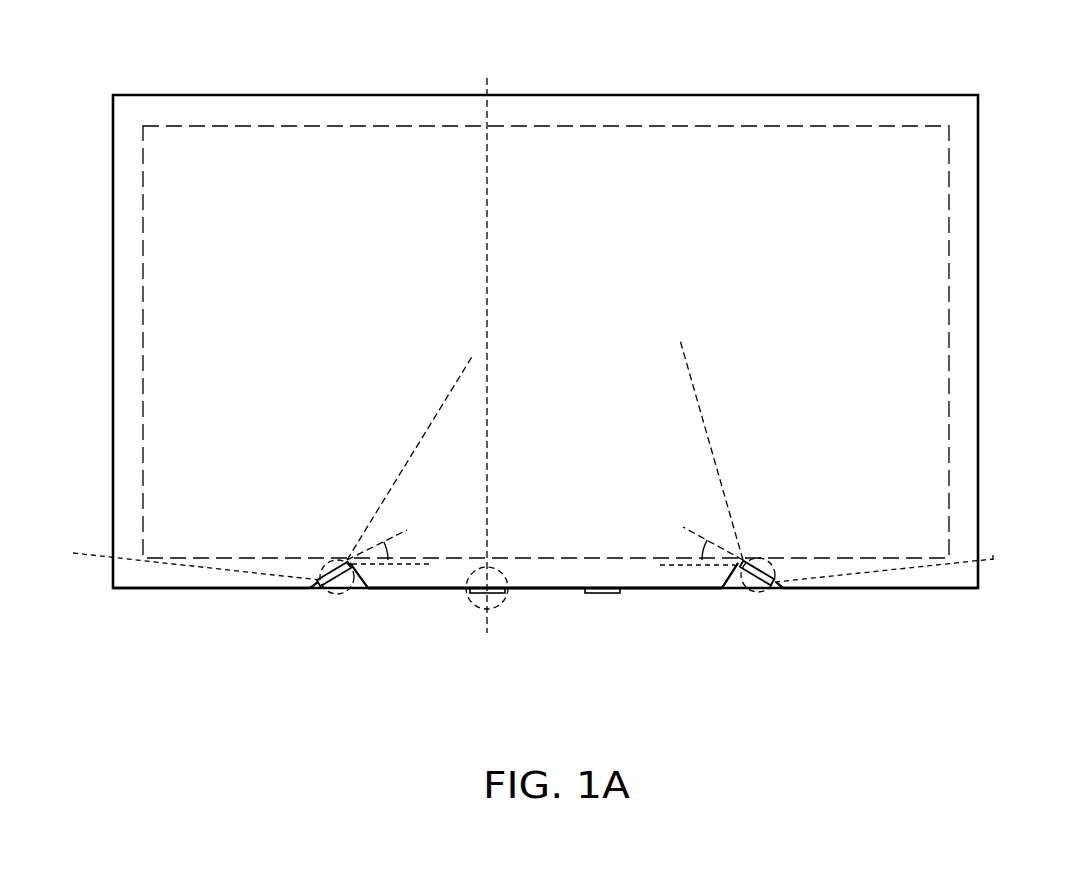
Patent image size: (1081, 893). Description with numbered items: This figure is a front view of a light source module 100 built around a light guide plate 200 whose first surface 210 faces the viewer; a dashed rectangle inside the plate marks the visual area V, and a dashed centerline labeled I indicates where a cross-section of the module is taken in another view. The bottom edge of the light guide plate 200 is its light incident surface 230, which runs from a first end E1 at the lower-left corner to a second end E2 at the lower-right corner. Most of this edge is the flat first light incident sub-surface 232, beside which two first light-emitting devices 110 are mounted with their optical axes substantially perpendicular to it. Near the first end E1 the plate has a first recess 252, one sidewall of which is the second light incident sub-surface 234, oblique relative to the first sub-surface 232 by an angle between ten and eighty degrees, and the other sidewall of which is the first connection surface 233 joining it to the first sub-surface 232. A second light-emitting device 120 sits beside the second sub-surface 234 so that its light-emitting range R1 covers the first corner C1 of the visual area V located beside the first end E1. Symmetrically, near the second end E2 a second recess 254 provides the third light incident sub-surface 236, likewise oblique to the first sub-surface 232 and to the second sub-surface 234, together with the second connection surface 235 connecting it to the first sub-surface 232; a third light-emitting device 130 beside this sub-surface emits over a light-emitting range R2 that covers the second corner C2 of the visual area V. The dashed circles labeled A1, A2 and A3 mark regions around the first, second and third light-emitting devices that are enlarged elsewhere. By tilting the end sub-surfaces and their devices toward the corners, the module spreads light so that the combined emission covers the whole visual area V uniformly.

The light source module 100 is at (996, 761).
The light guide plate 200 is at (968, 208).
The first surface 210 is at (874, 168).
The visual area V is at (949, 292).
The I-I line I is at (488, 358).
The first light-emitting device 110 is at (482, 610).
The second light-emitting device 120 is at (337, 570).
The third light-emitting device 130 is at (762, 565).
The light incident surface 230 is at (642, 594).
The first light incident sub-surface 232 is at (557, 594).
The first connection surface 233 is at (366, 592).
The second light incident sub-surface 234 is at (334, 586).
The second connection surface 235 is at (727, 590).
The third light incident sub-surface 236 is at (759, 594).
The first recess 252 is at (347, 606).
The second recess 254 is at (743, 605).
The region A1 is at (507, 602).
The region A2 is at (318, 592).
The region A3 is at (770, 590).
The light-emitting range R1 is at (212, 570).
The light-emitting range R2 is at (993, 561).
The first corner C1 is at (141, 552).
The second corner C2 is at (949, 557).
The first end E1 is at (110, 592).
The second end E2 is at (981, 592).